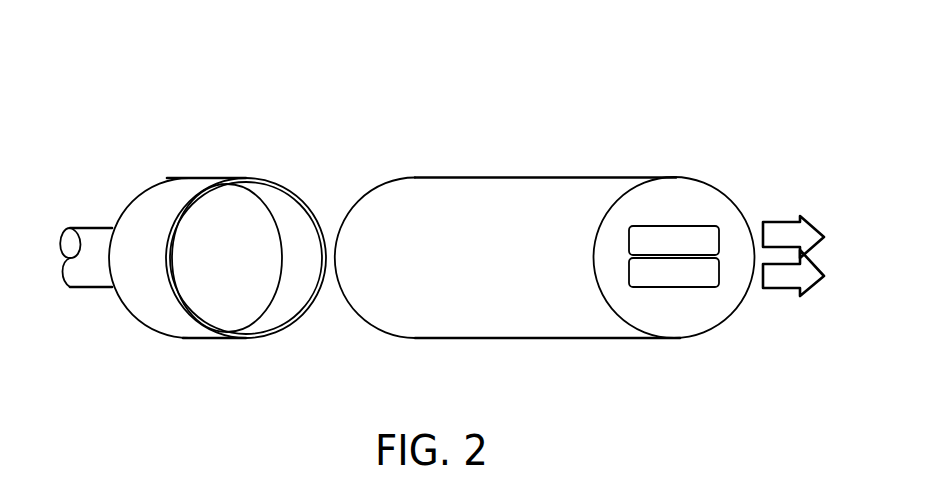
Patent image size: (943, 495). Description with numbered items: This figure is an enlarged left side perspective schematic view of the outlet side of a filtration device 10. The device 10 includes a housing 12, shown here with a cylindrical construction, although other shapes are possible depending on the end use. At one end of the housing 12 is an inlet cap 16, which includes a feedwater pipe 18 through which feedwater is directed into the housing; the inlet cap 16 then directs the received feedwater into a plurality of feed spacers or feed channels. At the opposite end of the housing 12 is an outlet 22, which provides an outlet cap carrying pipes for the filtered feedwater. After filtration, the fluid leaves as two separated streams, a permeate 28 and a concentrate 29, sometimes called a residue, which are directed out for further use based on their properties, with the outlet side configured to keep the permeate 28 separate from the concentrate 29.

The filtration device 10 is at (497, 98).
The housing 12 is at (527, 178).
The inlet cap 16 is at (180, 192).
The feedwater pipe 18 is at (97, 243).
The outlet 22 is at (705, 198).
The permeate 28 is at (777, 277).
The concentrate 29 is at (778, 233).